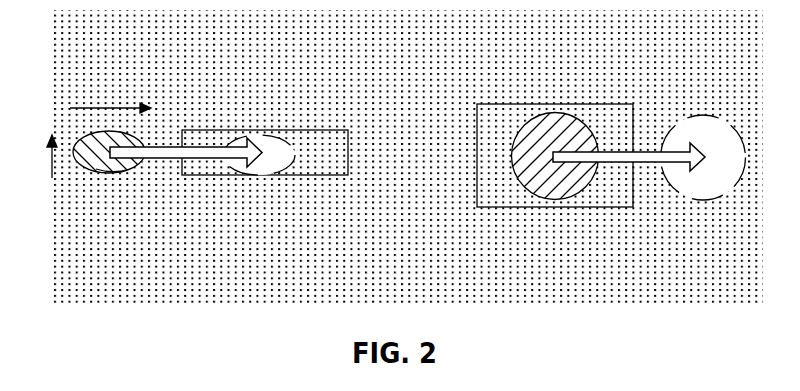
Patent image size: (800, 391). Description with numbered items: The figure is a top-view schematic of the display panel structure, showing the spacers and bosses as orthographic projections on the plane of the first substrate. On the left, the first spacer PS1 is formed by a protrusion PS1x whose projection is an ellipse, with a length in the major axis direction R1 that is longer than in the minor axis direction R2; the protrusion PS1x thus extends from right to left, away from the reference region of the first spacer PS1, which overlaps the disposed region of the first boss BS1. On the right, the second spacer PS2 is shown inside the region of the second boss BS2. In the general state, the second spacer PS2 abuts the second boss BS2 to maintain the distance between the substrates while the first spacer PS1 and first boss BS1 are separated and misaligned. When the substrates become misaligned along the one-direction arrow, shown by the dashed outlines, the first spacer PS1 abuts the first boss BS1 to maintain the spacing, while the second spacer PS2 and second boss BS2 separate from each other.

The first spacer PS1 is at (90, 131).
The protrusion PS1x is at (112, 171).
The first boss BS1 is at (326, 157).
The major axis direction R1 is at (126, 110).
The minor axis direction R2 is at (34, 156).
The second spacer PS2 is at (545, 132).
The second boss BS2 is at (617, 190).